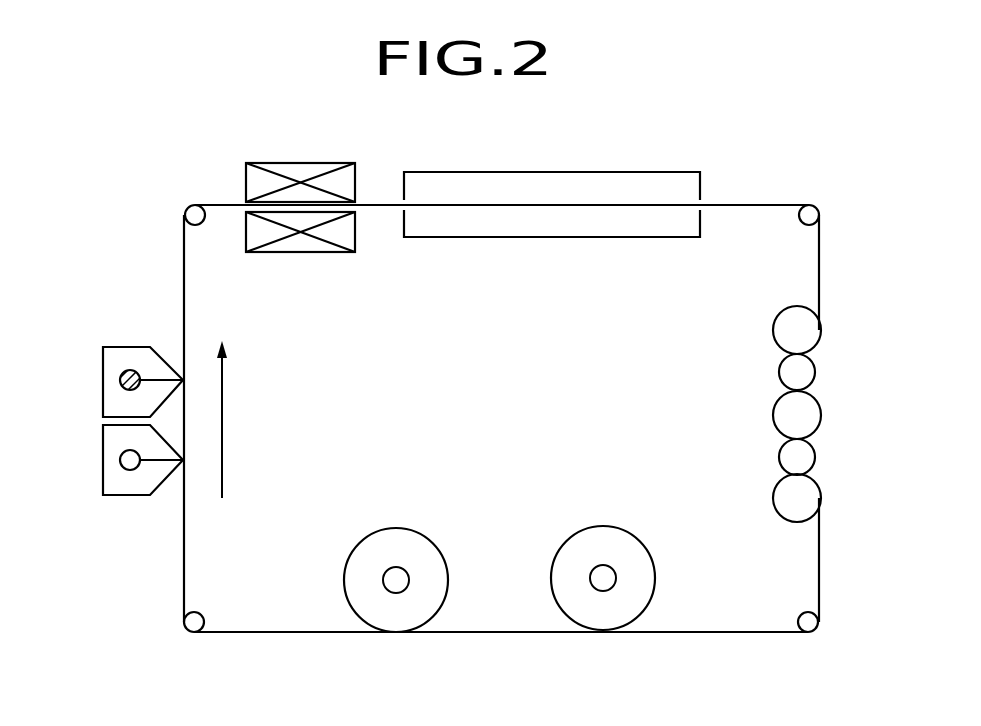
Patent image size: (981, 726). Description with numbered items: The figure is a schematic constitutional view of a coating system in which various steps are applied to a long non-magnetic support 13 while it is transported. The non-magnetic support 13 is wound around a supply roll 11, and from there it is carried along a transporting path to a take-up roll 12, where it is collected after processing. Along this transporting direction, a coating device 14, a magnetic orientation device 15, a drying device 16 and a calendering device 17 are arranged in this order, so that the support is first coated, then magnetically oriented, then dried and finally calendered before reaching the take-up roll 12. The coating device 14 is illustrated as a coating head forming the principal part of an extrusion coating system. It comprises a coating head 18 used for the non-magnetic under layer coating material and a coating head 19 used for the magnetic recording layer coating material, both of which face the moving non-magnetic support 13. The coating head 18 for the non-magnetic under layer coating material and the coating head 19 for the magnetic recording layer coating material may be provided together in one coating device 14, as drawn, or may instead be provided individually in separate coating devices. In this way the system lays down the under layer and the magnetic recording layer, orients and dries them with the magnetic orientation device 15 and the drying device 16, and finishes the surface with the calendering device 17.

The supply roll 11 is at (425, 624).
The take-up roll 12 is at (566, 616).
The non-magnetic support 13 is at (272, 634).
The coating device 14 is at (105, 421).
The magnetic orientation device 15 is at (300, 162).
The drying device 16 is at (576, 172).
The calendering device 17 is at (822, 414).
The coating head 18 is at (122, 498).
The coating head 19 is at (133, 346).